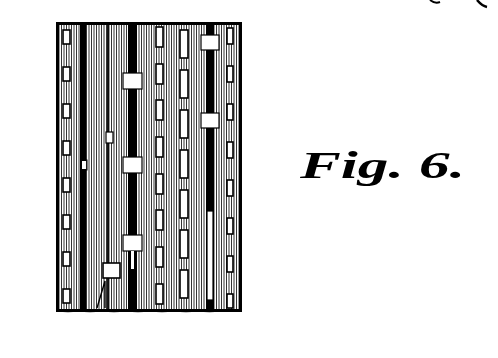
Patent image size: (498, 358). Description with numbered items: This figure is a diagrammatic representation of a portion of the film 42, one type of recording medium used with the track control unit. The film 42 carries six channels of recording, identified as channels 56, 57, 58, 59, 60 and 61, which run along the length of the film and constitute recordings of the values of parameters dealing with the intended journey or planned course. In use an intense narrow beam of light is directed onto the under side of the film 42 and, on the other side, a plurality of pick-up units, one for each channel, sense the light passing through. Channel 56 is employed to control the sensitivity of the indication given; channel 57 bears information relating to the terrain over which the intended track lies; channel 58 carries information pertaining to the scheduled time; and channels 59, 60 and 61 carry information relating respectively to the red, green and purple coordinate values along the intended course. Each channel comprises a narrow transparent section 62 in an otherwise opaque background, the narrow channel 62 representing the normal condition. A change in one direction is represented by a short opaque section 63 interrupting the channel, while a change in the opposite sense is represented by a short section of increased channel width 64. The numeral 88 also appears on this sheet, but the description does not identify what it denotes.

The film 42 is at (243, 116).
The channel 56 is at (84, 73).
The channel 57 is at (108, 60).
The channel 58 is at (129, 311).
The channel 59 is at (157, 24).
The channel 60 is at (186, 306).
The channel 61 is at (212, 24).
The narrow transparent section 62 is at (86, 278).
The short opaque section 63 is at (86, 168).
The section of increased channel width 64 is at (99, 307).
The link 88 is at (377, 0).